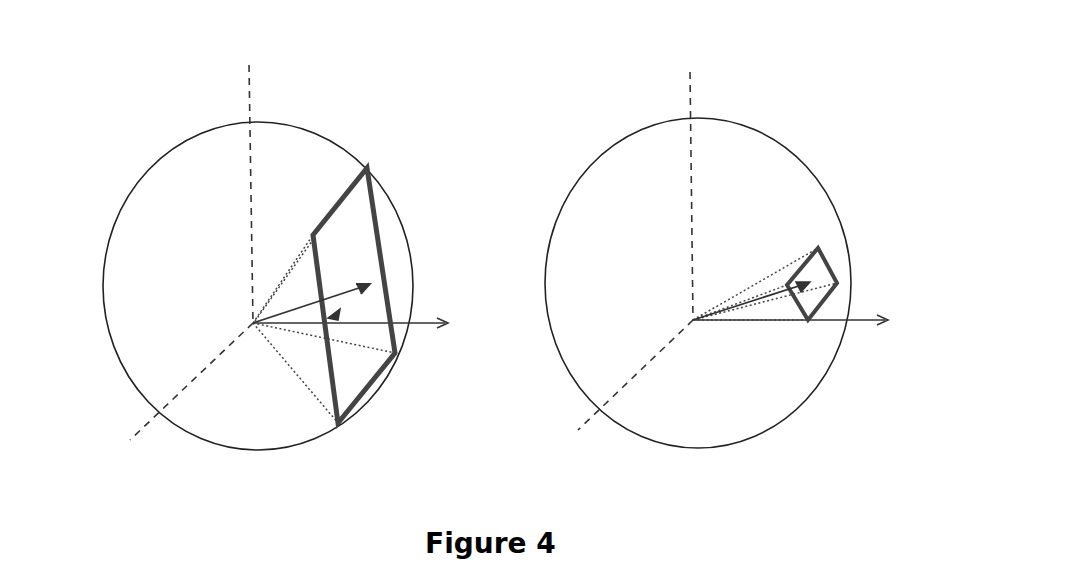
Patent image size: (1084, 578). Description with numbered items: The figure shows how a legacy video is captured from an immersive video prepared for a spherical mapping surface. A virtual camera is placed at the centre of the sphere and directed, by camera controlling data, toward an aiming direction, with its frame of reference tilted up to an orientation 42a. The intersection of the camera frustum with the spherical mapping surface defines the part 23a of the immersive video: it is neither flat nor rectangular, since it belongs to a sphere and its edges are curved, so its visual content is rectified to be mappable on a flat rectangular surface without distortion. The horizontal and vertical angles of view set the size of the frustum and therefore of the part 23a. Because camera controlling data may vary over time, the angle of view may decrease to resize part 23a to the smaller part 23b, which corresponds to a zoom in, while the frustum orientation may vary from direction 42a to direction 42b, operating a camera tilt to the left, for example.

The part of the immersive video 23a is at (377, 222).
The orientation 42a is at (333, 313).
The part of the immersive video 23b is at (823, 305).
The direction 42b is at (807, 273).